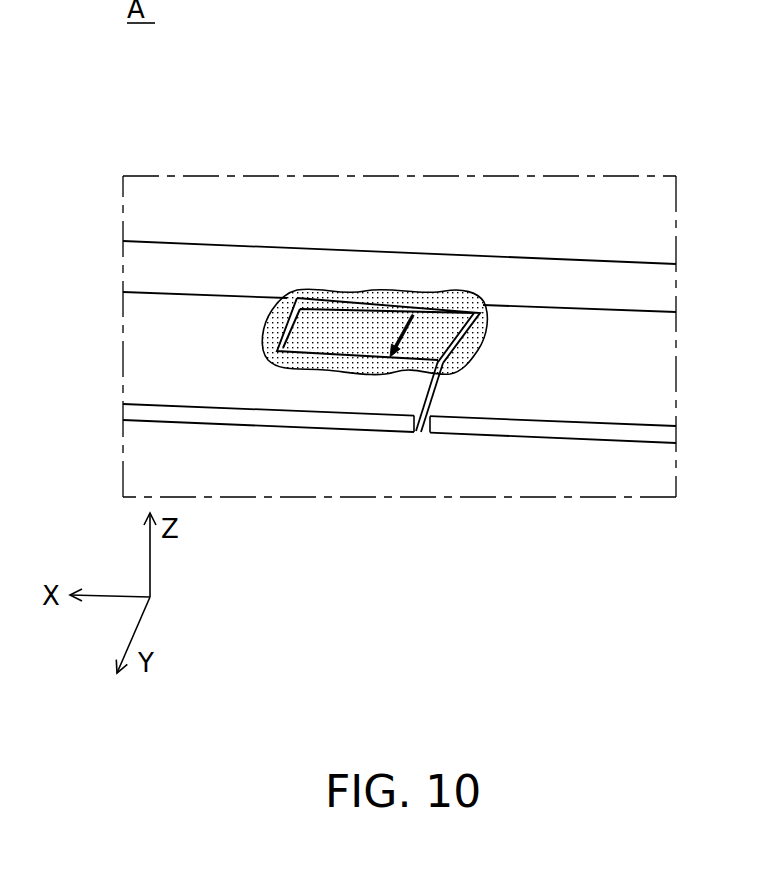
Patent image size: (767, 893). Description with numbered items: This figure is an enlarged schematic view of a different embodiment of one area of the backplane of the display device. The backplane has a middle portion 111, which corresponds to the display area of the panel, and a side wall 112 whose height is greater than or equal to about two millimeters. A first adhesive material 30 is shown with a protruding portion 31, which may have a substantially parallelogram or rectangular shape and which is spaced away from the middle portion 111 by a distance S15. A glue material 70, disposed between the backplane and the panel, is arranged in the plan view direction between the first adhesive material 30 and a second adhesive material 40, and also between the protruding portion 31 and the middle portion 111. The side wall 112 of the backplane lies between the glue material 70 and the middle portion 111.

The glue material 70 is at (325, 327).
The distance S15 is at (401, 328).
The middle portion 111 is at (482, 192).
The side wall 112 is at (656, 290).
The first adhesive material 30 is at (142, 353).
The protruding portion 31 is at (375, 387).
The second adhesive material 40 is at (657, 374).